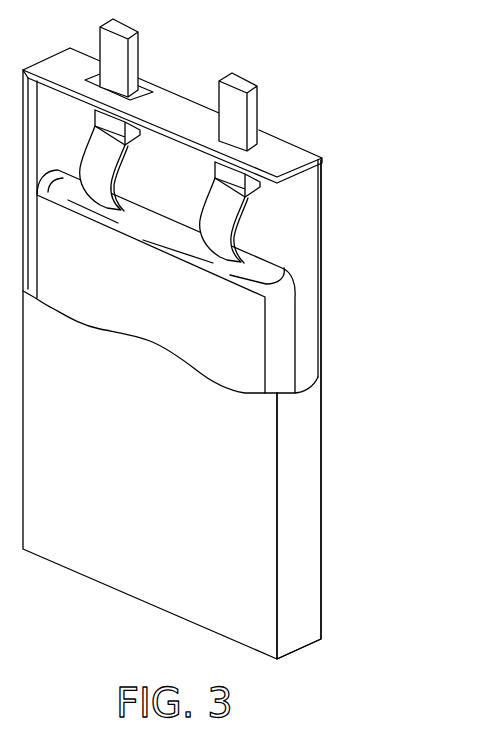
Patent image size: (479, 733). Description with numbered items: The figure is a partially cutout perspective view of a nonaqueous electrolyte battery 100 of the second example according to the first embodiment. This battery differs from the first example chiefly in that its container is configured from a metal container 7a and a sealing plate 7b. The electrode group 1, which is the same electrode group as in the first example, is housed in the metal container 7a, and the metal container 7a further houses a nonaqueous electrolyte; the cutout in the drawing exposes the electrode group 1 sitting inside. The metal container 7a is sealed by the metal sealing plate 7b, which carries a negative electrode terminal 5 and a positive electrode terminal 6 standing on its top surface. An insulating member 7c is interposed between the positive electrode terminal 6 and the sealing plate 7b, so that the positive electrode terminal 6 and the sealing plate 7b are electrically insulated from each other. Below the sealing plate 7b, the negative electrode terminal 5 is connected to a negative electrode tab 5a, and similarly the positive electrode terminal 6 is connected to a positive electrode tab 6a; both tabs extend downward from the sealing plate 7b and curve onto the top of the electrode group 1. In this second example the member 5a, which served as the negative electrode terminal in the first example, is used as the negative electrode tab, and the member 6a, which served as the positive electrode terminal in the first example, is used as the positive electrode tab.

The electrode group 1 is at (300, 298).
The negative electrode terminal 5 is at (260, 107).
The negative electrode tab 5a is at (220, 224).
The positive electrode terminal 6 is at (135, 52).
The positive electrode tab 6a is at (98, 172).
The metal container 7a is at (305, 488).
The sealing plate 7b is at (272, 148).
The insulating member 7c is at (143, 92).
The nonaqueous electrolyte battery 100 is at (361, 215).